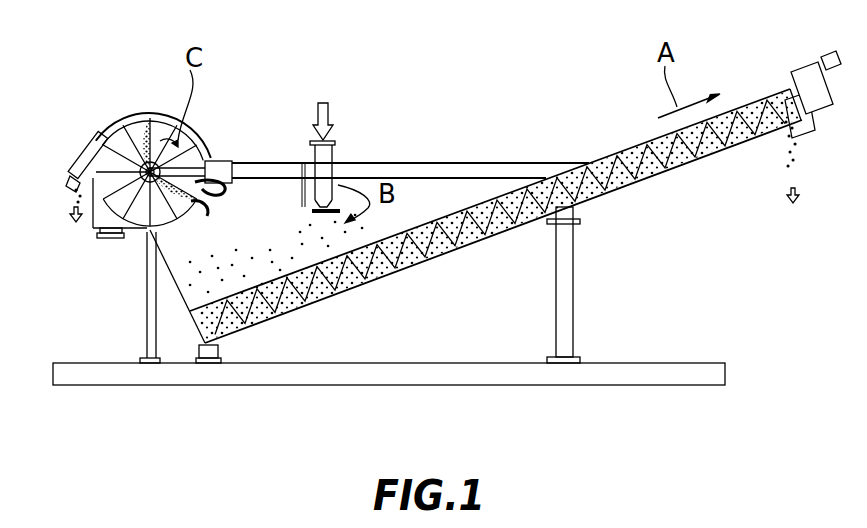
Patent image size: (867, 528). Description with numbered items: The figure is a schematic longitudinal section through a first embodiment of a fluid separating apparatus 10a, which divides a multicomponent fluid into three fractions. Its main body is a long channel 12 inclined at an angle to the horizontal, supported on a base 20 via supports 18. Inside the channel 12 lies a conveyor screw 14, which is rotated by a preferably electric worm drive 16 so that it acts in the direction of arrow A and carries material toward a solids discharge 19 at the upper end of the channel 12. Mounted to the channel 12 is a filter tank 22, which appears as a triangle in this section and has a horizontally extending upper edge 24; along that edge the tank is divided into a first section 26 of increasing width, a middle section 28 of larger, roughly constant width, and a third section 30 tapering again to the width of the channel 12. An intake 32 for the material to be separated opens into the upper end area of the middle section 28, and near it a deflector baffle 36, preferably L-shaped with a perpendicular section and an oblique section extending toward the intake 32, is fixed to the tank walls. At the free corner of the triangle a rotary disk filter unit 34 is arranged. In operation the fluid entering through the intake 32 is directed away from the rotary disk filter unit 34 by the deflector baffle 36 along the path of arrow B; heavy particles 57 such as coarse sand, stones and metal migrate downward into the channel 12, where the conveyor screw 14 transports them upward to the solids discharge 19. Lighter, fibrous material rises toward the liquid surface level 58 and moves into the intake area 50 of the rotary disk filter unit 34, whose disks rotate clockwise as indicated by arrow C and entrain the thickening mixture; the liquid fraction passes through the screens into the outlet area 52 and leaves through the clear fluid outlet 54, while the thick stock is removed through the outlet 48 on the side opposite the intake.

The fluid separating apparatus 10a is at (530, 104).
The channel 12 is at (466, 248).
The conveyor screw 14 is at (635, 183).
The worm drive 16 is at (796, 70).
The supports 18 is at (220, 340).
The solids discharge 19 is at (796, 140).
The base 20 is at (700, 360).
The filter tank 22 is at (455, 200).
The upper edge 24 is at (560, 161).
The first section 26 is at (222, 254).
The middle section 28 is at (289, 226).
The third section 30 is at (429, 201).
The intake 32 is at (334, 158).
The rotary disk filter unit 34 is at (138, 100).
The deflector baffle 36 is at (303, 180).
The outlet for the thick stock 48 is at (74, 133).
The intake area 50 is at (213, 157).
The outlet area 52 is at (98, 218).
The clear fluid outlet 54 is at (108, 240).
The heavy particles 57 is at (344, 274).
The liquid surface level 58 is at (500, 177).